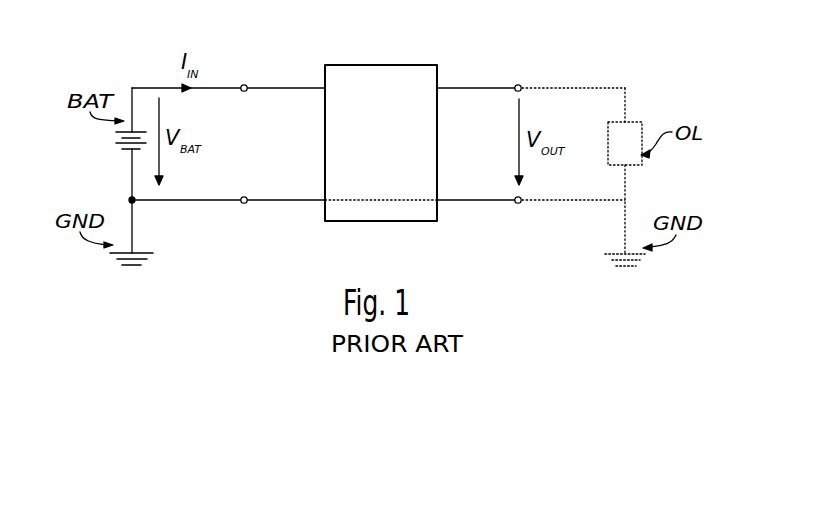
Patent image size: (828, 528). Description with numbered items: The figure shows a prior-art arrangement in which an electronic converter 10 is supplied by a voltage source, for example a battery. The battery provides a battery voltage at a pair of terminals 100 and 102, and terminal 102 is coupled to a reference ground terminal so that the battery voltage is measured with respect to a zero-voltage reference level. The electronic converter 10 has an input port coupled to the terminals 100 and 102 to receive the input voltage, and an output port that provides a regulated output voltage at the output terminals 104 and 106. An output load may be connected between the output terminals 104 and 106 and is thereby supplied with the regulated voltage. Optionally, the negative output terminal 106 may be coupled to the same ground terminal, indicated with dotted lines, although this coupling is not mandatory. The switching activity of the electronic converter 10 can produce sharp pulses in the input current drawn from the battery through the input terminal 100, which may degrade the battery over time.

The electronic converter 10 is at (392, 70).
The terminal 100 is at (244, 85).
The terminal 102 is at (244, 203).
The output terminal 104 is at (518, 85).
The output terminal 106 is at (518, 203).